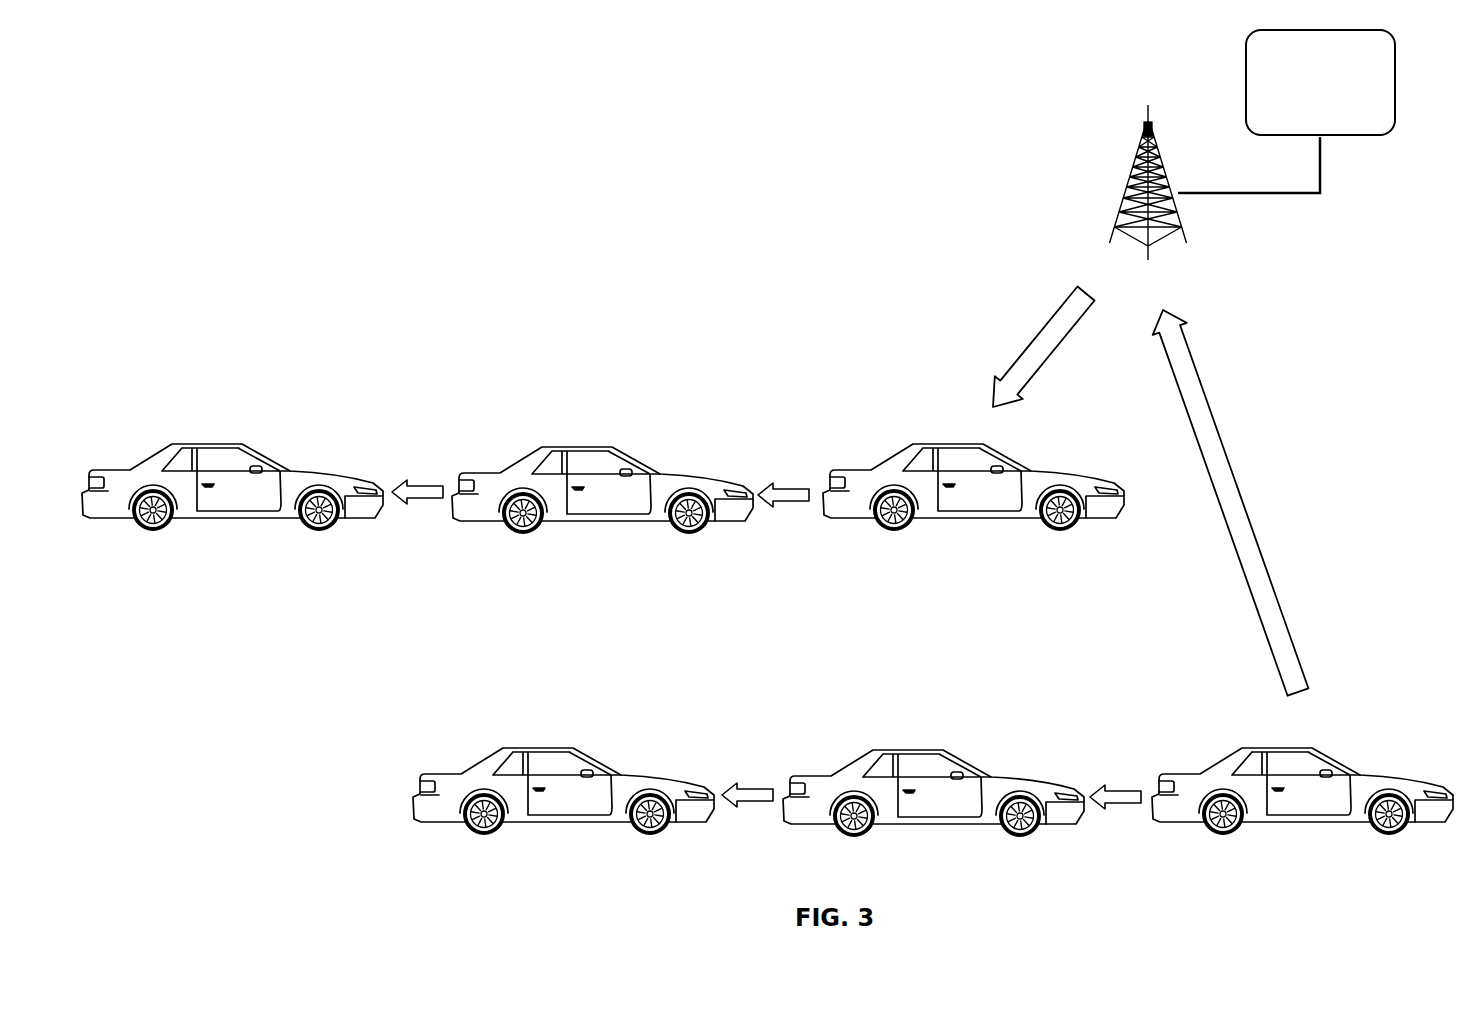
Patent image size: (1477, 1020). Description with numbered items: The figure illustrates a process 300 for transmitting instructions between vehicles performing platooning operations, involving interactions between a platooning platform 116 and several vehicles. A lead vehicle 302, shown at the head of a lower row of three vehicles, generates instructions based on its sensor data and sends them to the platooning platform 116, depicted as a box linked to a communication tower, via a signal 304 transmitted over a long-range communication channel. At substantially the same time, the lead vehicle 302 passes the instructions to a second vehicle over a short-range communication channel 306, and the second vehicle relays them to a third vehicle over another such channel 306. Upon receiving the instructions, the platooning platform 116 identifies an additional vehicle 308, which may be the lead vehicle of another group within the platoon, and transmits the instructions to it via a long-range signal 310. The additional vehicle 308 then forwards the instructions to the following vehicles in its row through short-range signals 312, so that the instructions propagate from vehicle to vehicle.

The process 300 is at (634, 470).
The platooning platform 116 is at (1286, 111).
The lead vehicle 302 is at (1392, 775).
The signal 304 is at (1231, 503).
The short-range communication channel 306 is at (936, 782).
The additional vehicle 308 is at (1095, 522).
The signal 310 is at (1039, 347).
The signal 312 is at (605, 481).